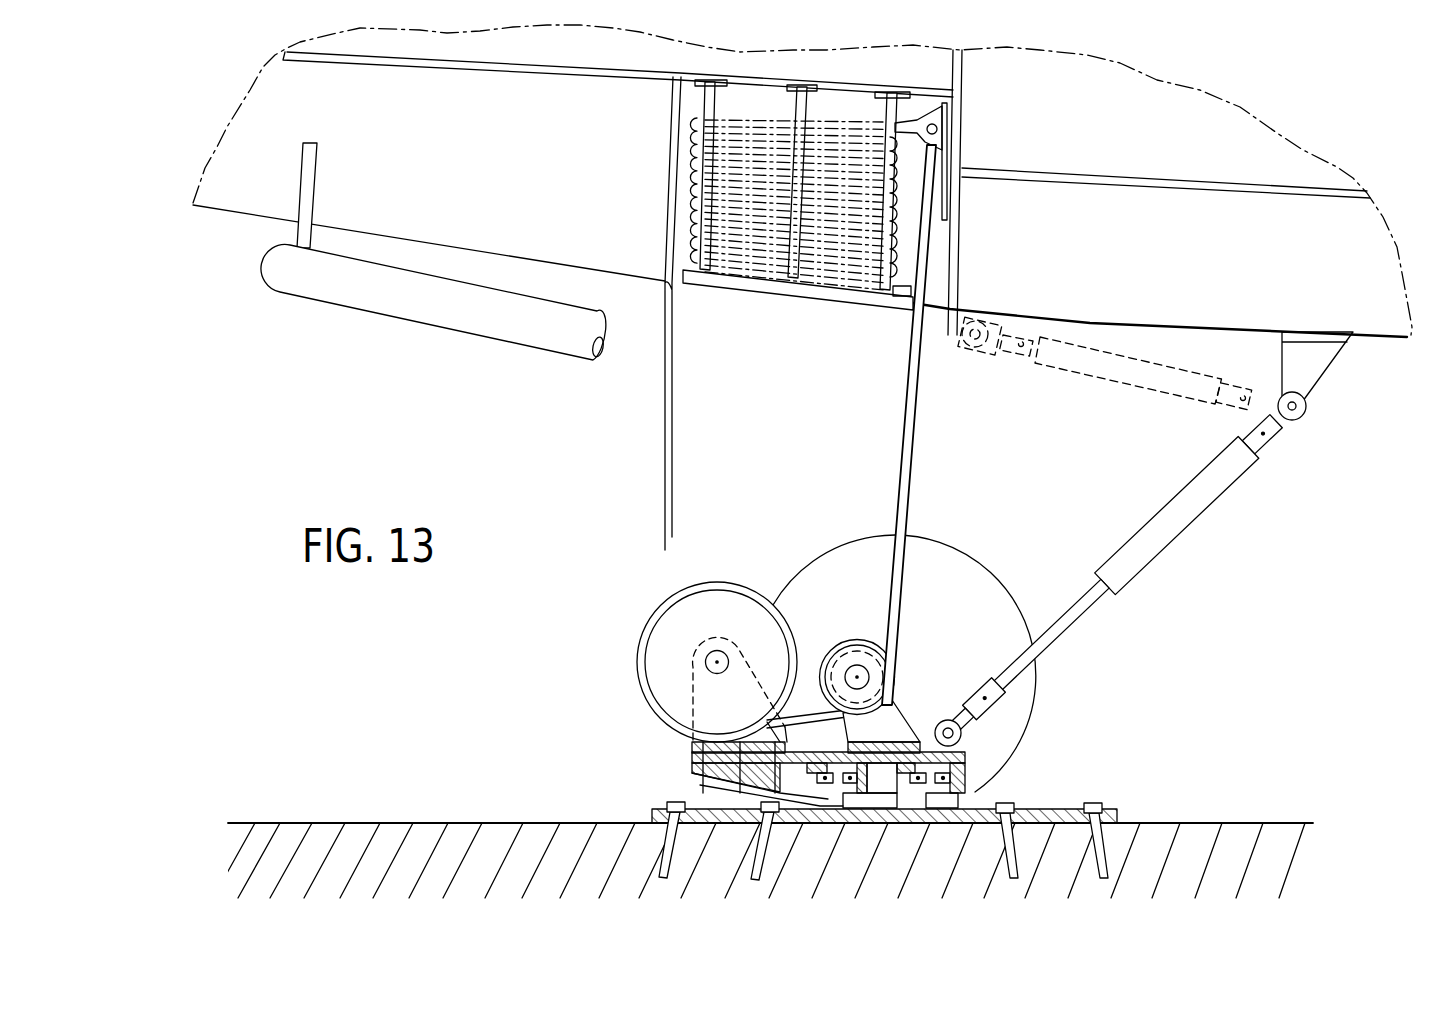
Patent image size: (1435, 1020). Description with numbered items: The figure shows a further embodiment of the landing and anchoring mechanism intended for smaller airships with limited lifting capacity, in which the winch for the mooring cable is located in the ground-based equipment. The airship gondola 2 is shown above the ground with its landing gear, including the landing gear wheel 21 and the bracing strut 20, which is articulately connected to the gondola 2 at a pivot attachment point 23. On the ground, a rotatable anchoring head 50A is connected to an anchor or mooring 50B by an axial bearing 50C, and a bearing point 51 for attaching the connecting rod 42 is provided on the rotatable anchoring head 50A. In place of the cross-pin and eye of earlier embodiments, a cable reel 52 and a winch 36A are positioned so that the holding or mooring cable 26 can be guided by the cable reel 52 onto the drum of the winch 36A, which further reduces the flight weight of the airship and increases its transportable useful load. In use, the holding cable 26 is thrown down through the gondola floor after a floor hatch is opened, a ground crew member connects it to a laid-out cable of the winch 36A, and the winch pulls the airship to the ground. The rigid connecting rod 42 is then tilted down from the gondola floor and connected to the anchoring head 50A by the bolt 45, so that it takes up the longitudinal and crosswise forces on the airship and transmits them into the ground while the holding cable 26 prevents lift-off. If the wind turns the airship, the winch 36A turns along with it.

The airship gondola 2 is at (247, 205).
The bracing strut 20 is at (448, 320).
The landing gear wheel 21 is at (822, 573).
The pivot attachment point 23 is at (307, 185).
The holding cable 26 is at (908, 393).
The winch 36A is at (665, 658).
The connecting rod 42 is at (1105, 380).
The bolt 45 is at (961, 732).
The rotatable anchoring head 50A is at (678, 770).
The anchor 50B is at (828, 798).
The axial bearing 50C is at (967, 787).
The bearing point 51 is at (963, 747).
The cable reel 52 is at (894, 676).